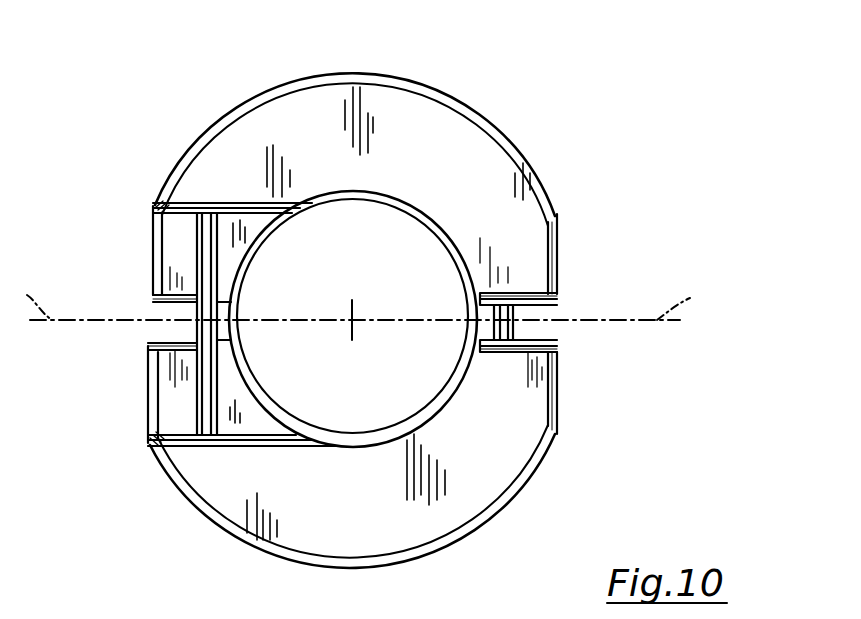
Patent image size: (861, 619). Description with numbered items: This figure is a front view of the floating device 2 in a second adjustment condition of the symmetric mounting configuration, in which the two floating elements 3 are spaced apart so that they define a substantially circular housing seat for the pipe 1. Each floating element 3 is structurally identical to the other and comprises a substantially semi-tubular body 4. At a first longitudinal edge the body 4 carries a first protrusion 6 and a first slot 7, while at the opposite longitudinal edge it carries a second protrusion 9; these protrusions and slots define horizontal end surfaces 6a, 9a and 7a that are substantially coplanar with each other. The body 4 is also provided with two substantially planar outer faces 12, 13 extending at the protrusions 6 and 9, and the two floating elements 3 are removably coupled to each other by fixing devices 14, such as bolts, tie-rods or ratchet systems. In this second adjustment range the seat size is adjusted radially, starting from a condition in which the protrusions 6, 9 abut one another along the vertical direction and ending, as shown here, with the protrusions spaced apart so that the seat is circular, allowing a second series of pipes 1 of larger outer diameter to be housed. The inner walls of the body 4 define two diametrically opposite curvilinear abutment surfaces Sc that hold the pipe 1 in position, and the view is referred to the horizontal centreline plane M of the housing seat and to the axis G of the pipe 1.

The pipe 1 is at (324, 200).
The floating device 2 is at (503, 105).
The floating element 3 is at (485, 157).
The substantially semi-tubular body 4 is at (440, 83).
The first protrusion 6 is at (178, 263).
The horizontal end surface of first protrusion 6a is at (152, 308).
The first slot 7 is at (228, 400).
The horizontal end surface of first slot 7a is at (160, 216).
The second protrusion 9 is at (522, 208).
The horizontal end surface of second protrusion 9a is at (535, 337).
The planar outer face 12 is at (152, 240).
The planar outer face 13 is at (560, 232).
The fixing device 14 is at (217, 212).
The center axis G is at (352, 320).
The median plane M is at (367, 288).
The curvilinear abutment surface Sc is at (362, 488).